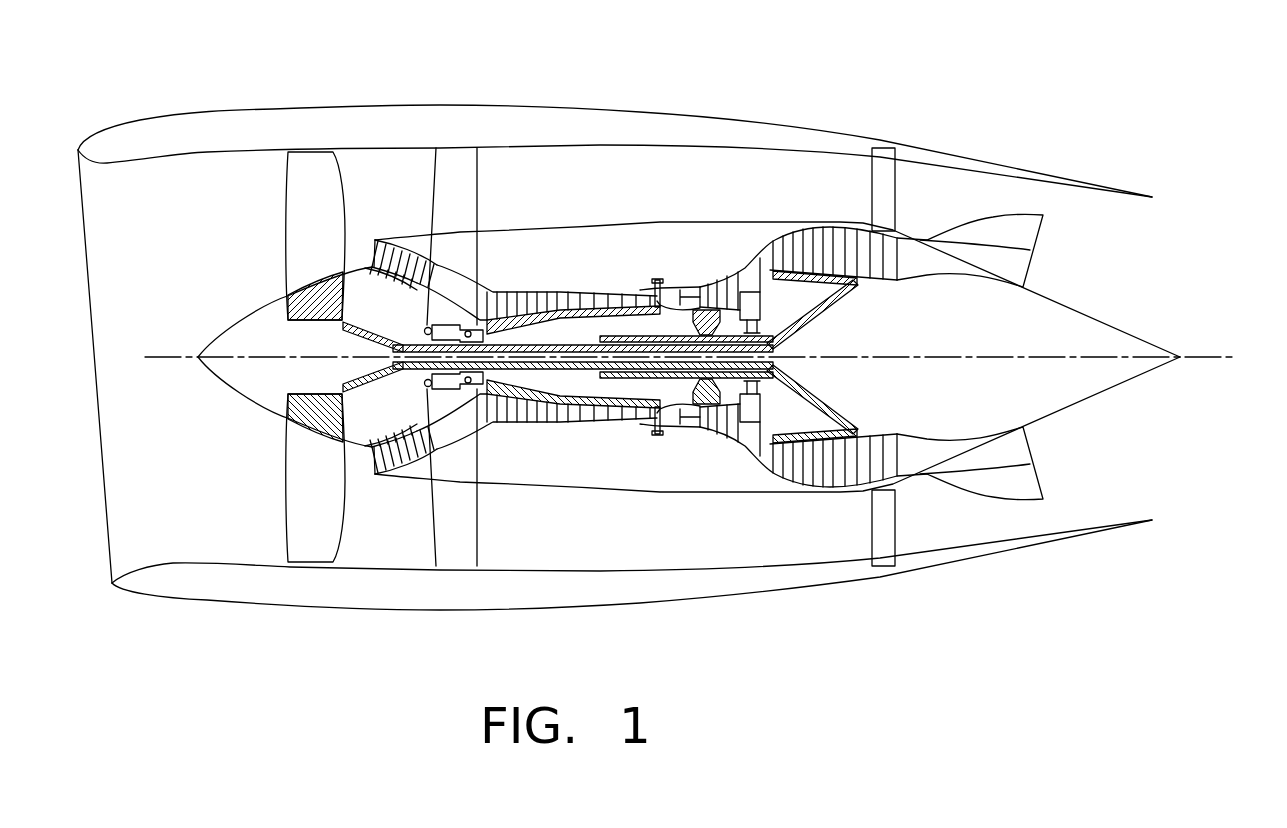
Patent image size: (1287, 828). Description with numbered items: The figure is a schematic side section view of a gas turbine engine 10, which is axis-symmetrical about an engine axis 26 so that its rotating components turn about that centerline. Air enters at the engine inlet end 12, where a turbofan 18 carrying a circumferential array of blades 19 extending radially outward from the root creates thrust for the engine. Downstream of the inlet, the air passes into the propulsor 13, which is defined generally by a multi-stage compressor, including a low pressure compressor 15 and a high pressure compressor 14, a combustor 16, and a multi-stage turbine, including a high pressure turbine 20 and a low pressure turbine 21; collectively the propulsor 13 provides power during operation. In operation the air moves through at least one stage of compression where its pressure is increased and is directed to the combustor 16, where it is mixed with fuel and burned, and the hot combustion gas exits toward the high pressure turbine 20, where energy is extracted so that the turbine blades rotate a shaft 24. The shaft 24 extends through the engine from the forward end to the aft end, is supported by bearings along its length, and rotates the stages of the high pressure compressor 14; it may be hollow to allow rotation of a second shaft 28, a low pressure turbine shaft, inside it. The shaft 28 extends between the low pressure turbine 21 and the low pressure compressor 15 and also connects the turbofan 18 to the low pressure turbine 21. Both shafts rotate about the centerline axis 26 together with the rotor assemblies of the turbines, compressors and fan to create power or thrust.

The gas turbine engine 10 is at (912, 88).
The engine inlet end 12 is at (102, 198).
The propulsor 13 is at (615, 222).
The high pressure compressor 14 is at (517, 292).
The low pressure compressor 15 is at (403, 230).
The combustor 16 is at (677, 276).
The turbofan 18 is at (258, 211).
The blades 19 is at (313, 478).
The high pressure turbine 20 is at (724, 272).
The low pressure turbine 21 is at (845, 288).
The shaft 24 is at (652, 408).
The engine axis 26 is at (1237, 357).
The second shaft 28 is at (567, 372).